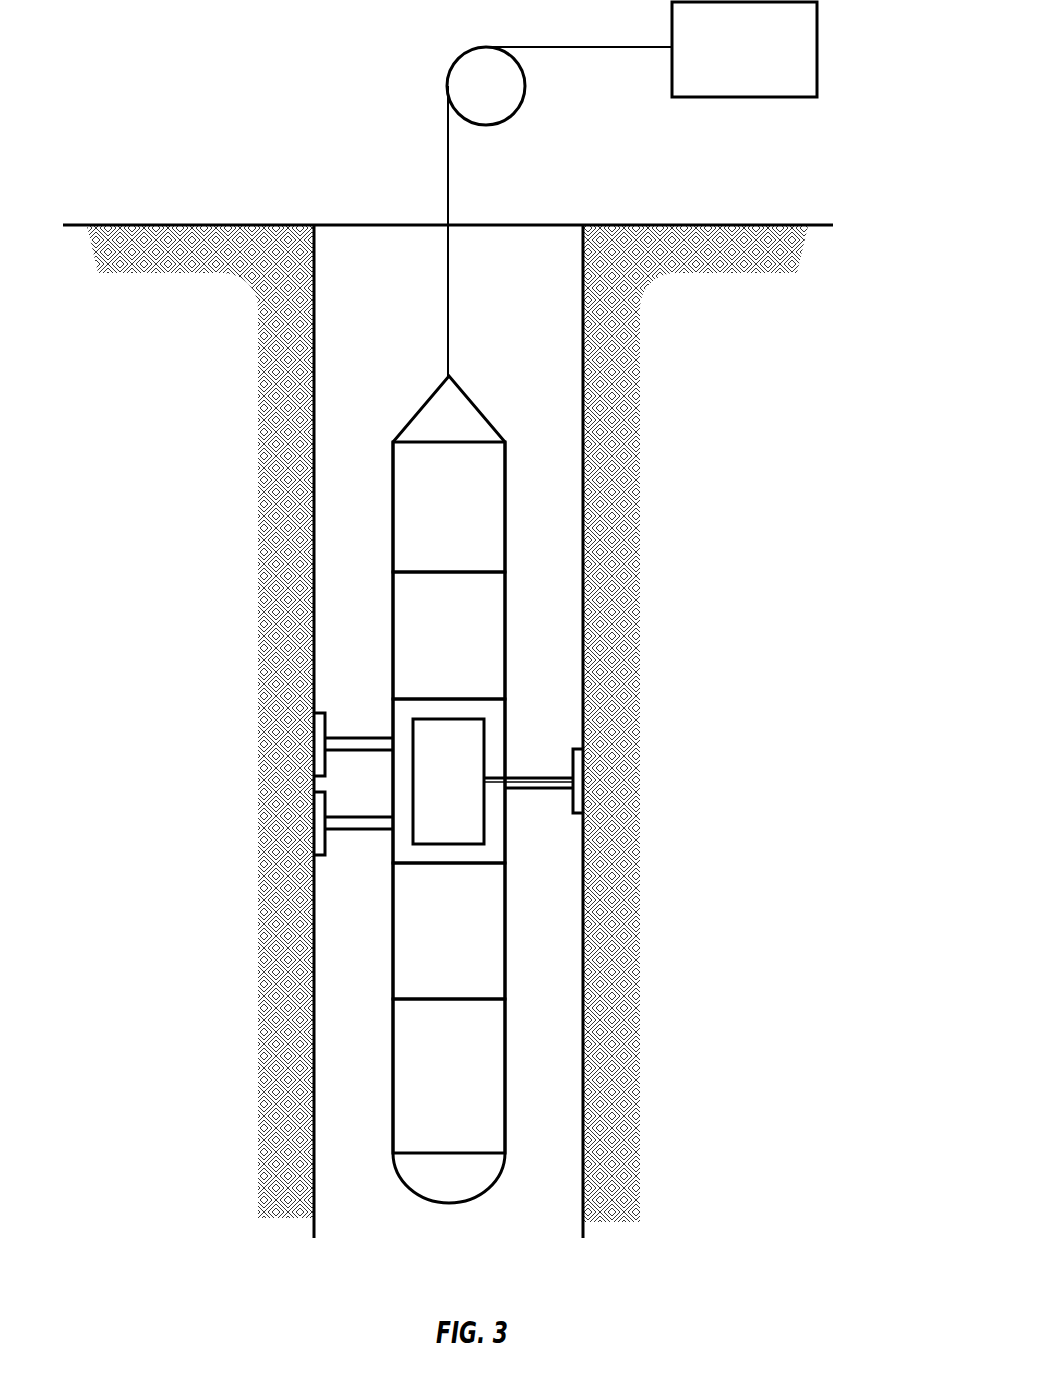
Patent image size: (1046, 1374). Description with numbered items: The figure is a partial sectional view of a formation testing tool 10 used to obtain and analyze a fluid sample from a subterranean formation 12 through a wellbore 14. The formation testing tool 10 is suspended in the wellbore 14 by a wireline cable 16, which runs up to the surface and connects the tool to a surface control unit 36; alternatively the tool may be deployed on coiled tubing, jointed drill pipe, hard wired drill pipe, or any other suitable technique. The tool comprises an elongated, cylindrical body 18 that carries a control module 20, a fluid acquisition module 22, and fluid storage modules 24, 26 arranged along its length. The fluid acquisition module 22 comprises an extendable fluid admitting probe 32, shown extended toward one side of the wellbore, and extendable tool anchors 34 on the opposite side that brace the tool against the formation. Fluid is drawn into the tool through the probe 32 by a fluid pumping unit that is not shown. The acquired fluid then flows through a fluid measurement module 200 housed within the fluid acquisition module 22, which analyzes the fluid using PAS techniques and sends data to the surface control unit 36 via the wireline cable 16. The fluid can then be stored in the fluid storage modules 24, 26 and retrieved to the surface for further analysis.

The formation testing tool 10 is at (353, 985).
The subterranean formation 12 is at (618, 500).
The wellbore 14 is at (378, 233).
The wireline cable 16 is at (447, 137).
The elongated, cylindrical body 18 is at (462, 521).
The control module 20 is at (462, 650).
The fluid acquisition module 22 is at (495, 722).
The fluid storage module 24 is at (462, 947).
The fluid storage module 26 is at (462, 1092).
The extendable fluid admitting probe 32 is at (578, 769).
The extendable tool anchors 34 is at (313, 733).
The surface control unit 36 is at (757, 61).
The fluid measurement module 200 is at (462, 799).